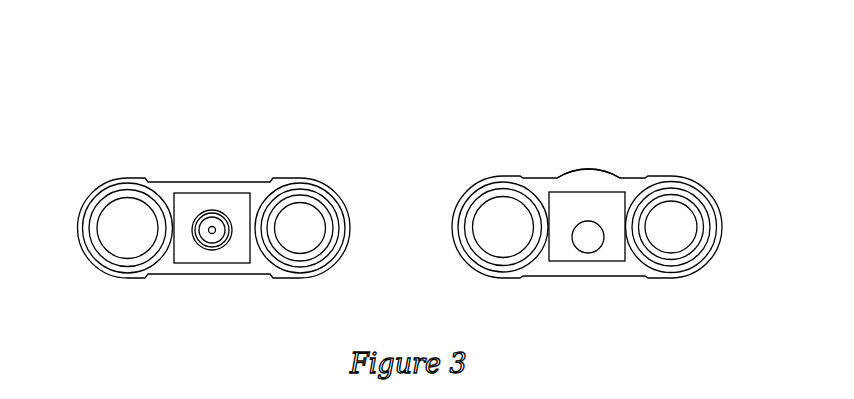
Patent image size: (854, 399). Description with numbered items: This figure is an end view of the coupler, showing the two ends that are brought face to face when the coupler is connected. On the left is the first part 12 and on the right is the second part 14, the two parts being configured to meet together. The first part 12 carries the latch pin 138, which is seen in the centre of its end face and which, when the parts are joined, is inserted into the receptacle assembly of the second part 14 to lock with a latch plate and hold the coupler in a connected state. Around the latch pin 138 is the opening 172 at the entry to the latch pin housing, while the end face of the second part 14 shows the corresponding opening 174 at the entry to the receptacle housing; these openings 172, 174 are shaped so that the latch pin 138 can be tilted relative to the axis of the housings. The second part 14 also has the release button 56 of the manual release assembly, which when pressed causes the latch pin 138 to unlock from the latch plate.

The first part 12 is at (118, 160).
The second part 14 is at (708, 153).
The release button 56 is at (589, 170).
The latch pin 138 is at (213, 228).
The opening 172 is at (213, 250).
The opening 174 is at (590, 237).